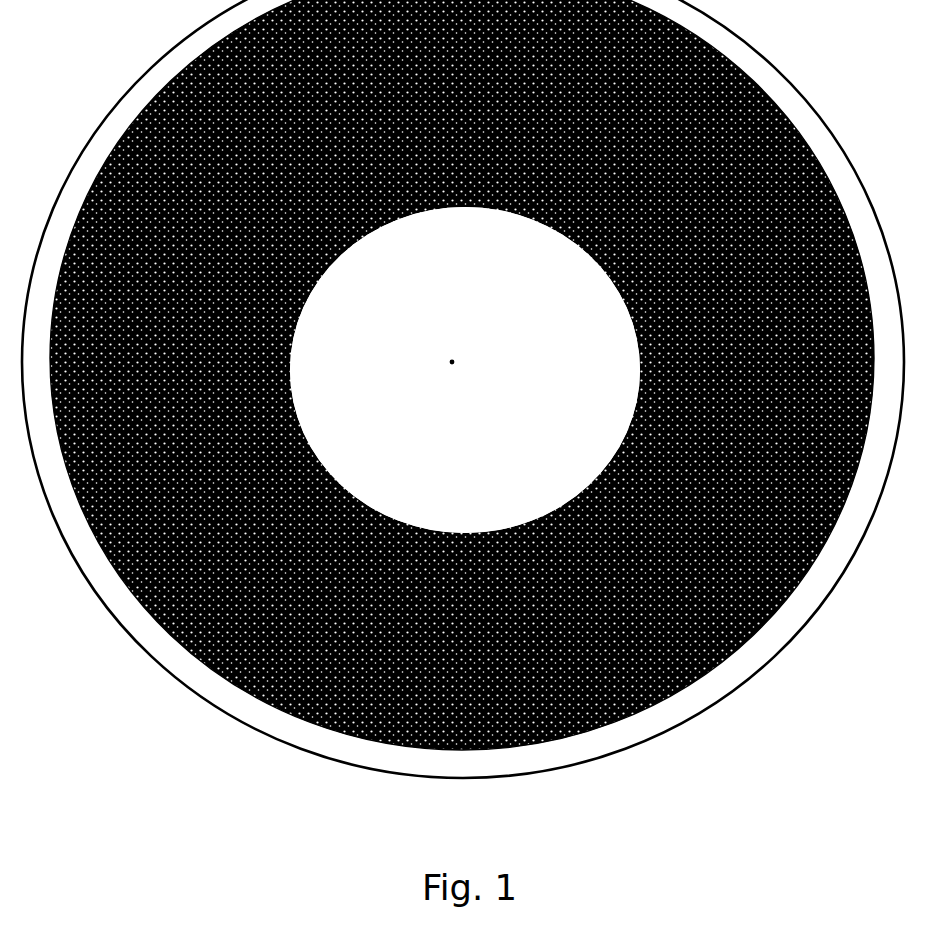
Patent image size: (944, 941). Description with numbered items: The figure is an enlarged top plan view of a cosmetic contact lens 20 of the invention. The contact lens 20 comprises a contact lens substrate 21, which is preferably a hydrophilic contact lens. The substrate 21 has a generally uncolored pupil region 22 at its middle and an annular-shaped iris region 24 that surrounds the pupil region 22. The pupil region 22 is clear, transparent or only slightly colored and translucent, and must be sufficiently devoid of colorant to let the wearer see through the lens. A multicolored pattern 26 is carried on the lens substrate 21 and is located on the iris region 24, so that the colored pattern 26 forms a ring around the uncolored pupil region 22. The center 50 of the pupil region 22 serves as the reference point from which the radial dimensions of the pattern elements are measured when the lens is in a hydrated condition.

The contact lens 20 is at (463, 406).
The contact lens substrate 21 is at (695, 702).
The pupil region 22 is at (487, 292).
The annular-shaped iris region 24 is at (118, 610).
The multicolored pattern 26 is at (307, 640).
The center of the pupil region 50 is at (452, 362).